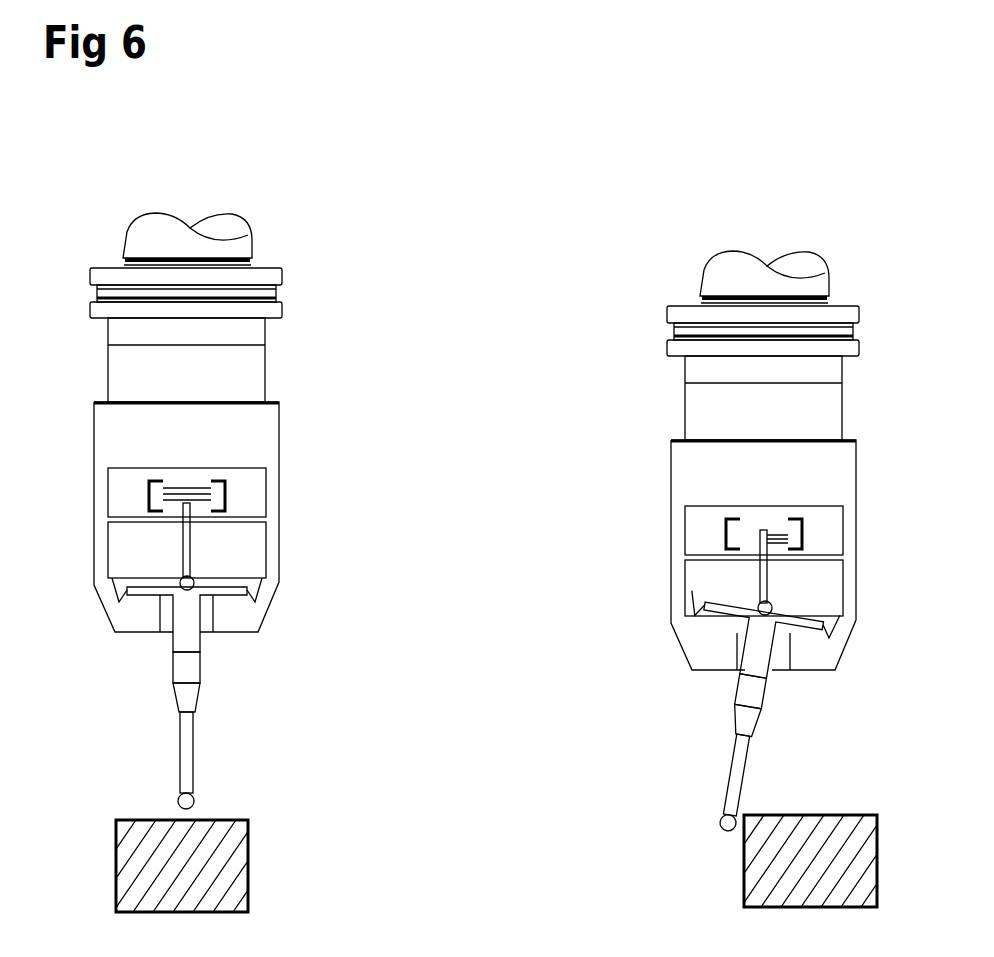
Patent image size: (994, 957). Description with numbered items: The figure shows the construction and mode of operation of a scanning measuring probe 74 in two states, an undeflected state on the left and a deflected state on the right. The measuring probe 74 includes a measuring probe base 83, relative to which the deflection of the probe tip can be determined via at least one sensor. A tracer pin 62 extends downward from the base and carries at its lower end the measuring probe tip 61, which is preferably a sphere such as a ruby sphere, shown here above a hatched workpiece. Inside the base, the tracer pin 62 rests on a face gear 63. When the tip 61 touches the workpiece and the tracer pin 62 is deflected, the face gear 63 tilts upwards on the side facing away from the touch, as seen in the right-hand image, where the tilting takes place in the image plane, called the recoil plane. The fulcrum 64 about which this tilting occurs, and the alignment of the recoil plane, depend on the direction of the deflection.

The measuring probe 74 is at (342, 370).
The measuring probe base 83 is at (263, 429).
The face gear 63 is at (118, 583).
The tracer pin 62 is at (203, 695).
The measuring probe tip 61 is at (194, 800).
The fulcrum 64 is at (833, 628).